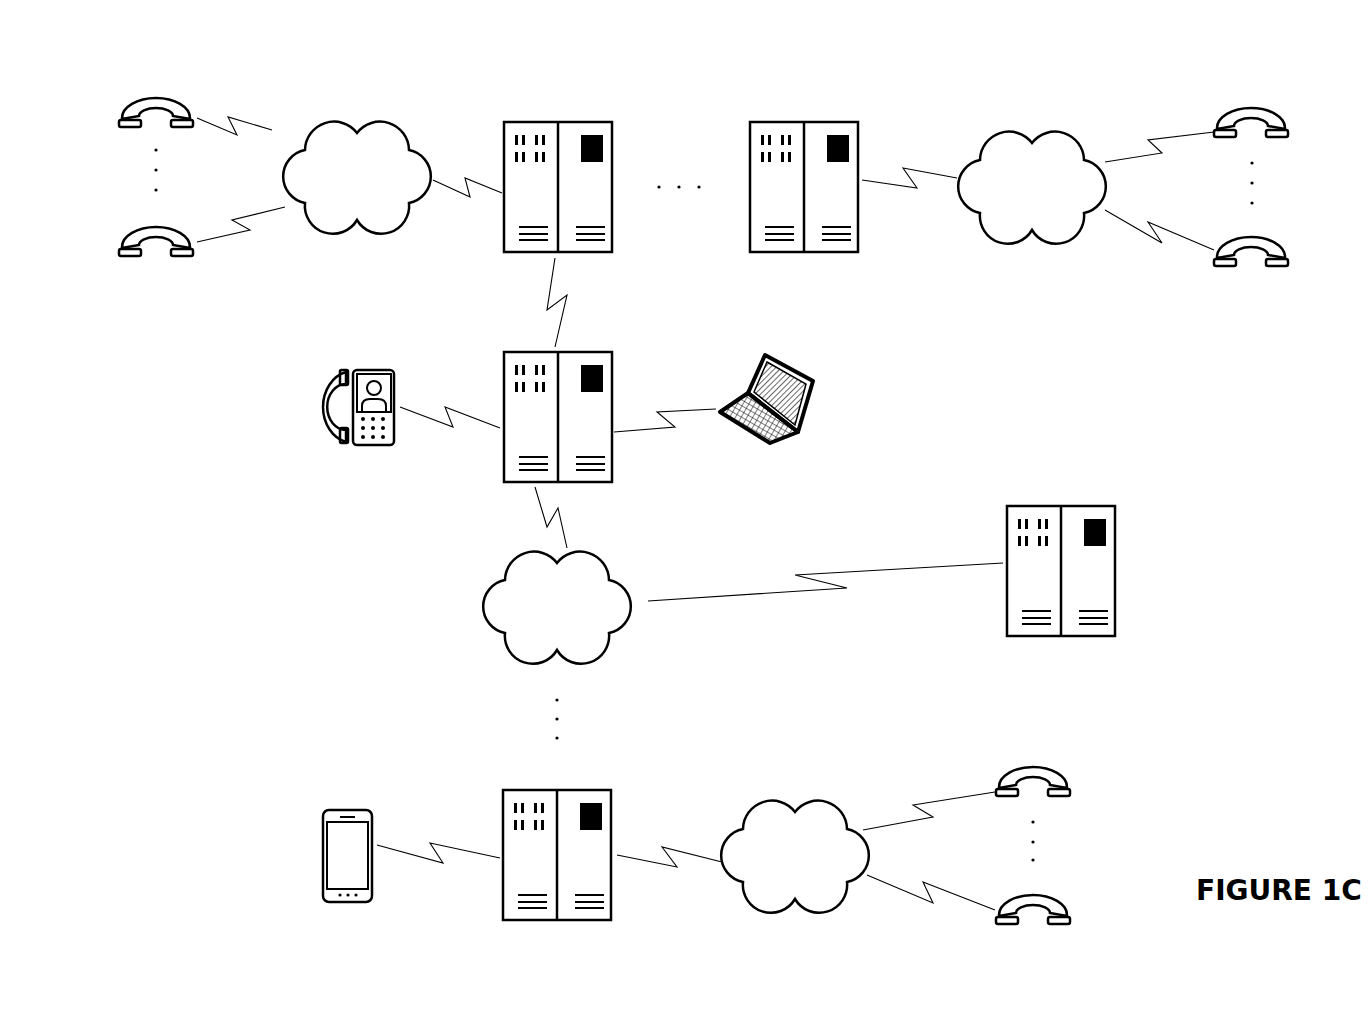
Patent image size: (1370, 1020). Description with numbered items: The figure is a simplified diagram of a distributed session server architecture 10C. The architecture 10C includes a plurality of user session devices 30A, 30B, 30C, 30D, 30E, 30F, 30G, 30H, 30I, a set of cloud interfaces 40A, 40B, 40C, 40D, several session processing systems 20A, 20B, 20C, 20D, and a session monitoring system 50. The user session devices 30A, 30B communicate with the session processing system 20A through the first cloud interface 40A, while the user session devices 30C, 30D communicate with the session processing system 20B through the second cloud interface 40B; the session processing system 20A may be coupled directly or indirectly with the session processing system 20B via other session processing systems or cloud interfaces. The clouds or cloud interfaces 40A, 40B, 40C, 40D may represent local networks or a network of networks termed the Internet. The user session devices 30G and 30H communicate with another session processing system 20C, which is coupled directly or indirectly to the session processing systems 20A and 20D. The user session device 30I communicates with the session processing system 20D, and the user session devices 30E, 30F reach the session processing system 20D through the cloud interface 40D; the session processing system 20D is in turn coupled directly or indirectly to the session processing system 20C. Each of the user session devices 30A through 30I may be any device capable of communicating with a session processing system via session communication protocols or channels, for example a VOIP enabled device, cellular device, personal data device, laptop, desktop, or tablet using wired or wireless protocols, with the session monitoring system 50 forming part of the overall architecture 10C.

The distributed session server architecture 10C is at (1267, 824).
The session processing system 20A is at (553, 118).
The session processing system 20B is at (810, 118).
The session processing system 20C is at (497, 370).
The session processing system 20D is at (493, 810).
The session monitoring system 50 is at (1068, 500).
The first cloud interface 40A is at (358, 115).
The second cloud interface 40B is at (1032, 126).
The cloud interface 40C is at (483, 607).
The cloud interface 40D is at (795, 795).
The user session device 30A is at (155, 95).
The user session device 30B is at (155, 268).
The user session device 30C is at (1252, 96).
The user session device 30D is at (1252, 269).
The user session device 30E is at (1033, 755).
The user session device 30F is at (1033, 928).
The user session device 30G is at (311, 407).
The user session device 30H is at (815, 407).
The user session device 30I is at (311, 850).